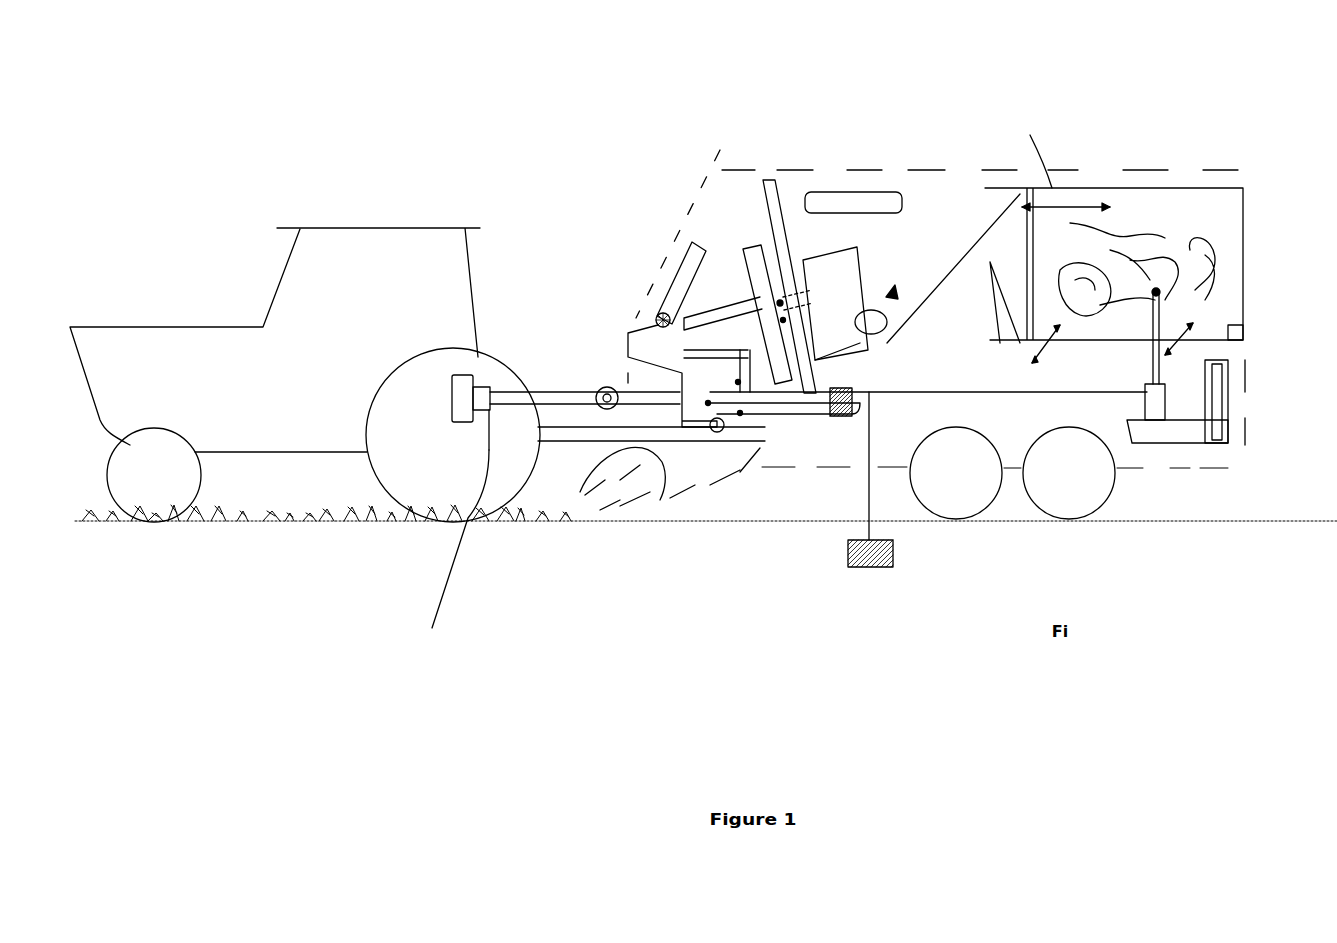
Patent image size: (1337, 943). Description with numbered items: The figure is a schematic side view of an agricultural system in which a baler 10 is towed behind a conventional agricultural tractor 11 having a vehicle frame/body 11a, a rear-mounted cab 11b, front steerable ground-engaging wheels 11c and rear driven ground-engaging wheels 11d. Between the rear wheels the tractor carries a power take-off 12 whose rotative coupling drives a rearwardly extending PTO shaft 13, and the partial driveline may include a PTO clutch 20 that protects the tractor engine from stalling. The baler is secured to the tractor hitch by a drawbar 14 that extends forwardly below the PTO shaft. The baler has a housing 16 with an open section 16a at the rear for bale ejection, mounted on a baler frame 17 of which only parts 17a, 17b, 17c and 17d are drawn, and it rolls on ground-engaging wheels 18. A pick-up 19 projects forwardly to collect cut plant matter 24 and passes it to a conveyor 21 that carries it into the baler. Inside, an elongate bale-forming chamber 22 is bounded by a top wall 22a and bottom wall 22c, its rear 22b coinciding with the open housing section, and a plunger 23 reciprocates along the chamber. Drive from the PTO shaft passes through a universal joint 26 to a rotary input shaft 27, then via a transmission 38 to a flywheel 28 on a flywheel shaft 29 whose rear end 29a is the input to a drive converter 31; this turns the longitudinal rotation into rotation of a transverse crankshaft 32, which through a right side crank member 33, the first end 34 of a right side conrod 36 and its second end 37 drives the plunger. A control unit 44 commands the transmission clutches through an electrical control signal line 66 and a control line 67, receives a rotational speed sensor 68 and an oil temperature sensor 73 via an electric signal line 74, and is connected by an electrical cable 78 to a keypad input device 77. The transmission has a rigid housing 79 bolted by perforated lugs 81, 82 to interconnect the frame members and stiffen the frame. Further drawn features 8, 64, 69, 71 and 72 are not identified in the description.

The sensor 8 is at (893, 342).
The baler 10 is at (1182, 170).
The agricultural tractor 11 is at (445, 213).
The vehicle frame/body 11a is at (172, 350).
The rear-mounted cab 11b is at (312, 248).
The front steerable ground-engaging wheels 11c is at (150, 500).
The rear driven ground-engaging wheels 11d is at (450, 503).
The power take-off 12 is at (490, 365).
The PTO shaft 13 is at (560, 392).
The drawbar 14 is at (540, 443).
The housing 16 is at (930, 170).
The open housing section 16a is at (1247, 200).
The baler frame 17 is at (873, 195).
The frame member 17a is at (698, 443).
The frame member 17b is at (683, 270).
The frame part 17c is at (833, 192).
The frame part 17d is at (1221, 407).
The ground-engaging wheels 18 is at (955, 508).
The pick-up 19 is at (580, 510).
The PTO clutch 20 is at (454, 551).
The conveyor 21 is at (622, 500).
The bale-forming chamber 22 is at (1220, 188).
The top wall 22a is at (1060, 233).
The rear of bale-forming chamber 22b is at (1247, 240).
The bottom wall 22c is at (1232, 327).
The plunger 23 is at (1007, 240).
The cut plant matter 24 is at (293, 522).
The universal joint 26 is at (598, 387).
The rotary input shaft 27 is at (653, 478).
The flywheel 28 is at (745, 247).
The flywheel shaft 29 is at (730, 313).
The rear end of flywheel shaft 29a is at (777, 250).
The drive converter 31 is at (769, 180).
The crankshaft 32 is at (873, 283).
The first right side crank member 33 is at (862, 352).
The first end of conrod 34 is at (889, 350).
The first right side conrod 36 is at (970, 280).
The second end of conrod 37 is at (994, 302).
The transmission 38 is at (645, 332).
The control unit 44 is at (872, 418).
The actuator 64 is at (1173, 423).
The electrical control signal line 66 is at (798, 415).
The control line 67 is at (753, 372).
The rotational speed sensor 68 is at (662, 480).
The bearing block 69 is at (825, 428).
The pivot joint 71 is at (780, 303).
The linkage 72 is at (818, 373).
The oil temperature sensor 73 is at (713, 402).
The electric signal line 74 is at (737, 443).
The input device 77 is at (845, 553).
The electrical cable 78 is at (870, 497).
The rigid housing 79 is at (724, 344).
The perforated lug 81 is at (716, 443).
The perforated lug 82 is at (657, 292).